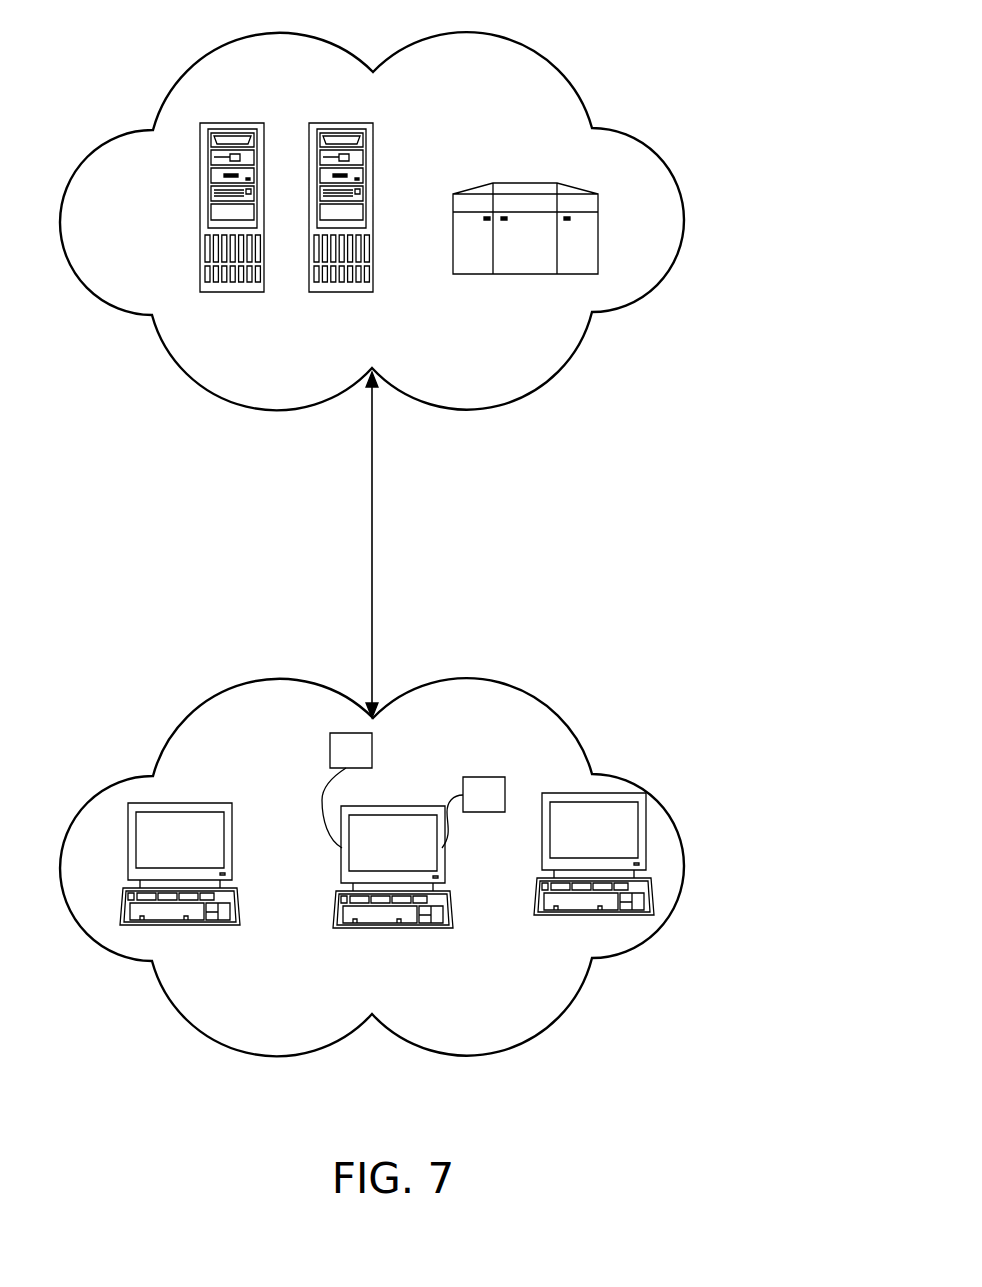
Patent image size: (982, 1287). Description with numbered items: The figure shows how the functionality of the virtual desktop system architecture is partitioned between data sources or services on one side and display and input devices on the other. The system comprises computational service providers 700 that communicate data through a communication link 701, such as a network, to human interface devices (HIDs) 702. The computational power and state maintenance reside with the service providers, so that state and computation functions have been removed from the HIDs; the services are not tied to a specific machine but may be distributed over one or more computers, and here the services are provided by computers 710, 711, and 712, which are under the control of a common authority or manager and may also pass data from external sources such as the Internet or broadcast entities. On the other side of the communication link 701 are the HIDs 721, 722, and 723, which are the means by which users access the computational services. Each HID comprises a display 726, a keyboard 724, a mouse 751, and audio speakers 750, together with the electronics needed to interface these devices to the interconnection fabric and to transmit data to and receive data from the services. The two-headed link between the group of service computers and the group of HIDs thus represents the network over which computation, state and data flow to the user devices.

The computational service providers 700 is at (692, 218).
The communication link 701 is at (388, 490).
The human interface devices 702 is at (692, 867).
The computer 710 is at (232, 228).
The computer 711 is at (341, 228).
The computer 712 is at (525, 250).
The human interface device 721 is at (180, 884).
The human interface device 722 is at (382, 884).
The human interface device 723 is at (594, 872).
The keyboard 724 is at (238, 914).
The display 726 is at (180, 840).
The audio speakers 750 is at (505, 795).
The mouse 751 is at (372, 752).